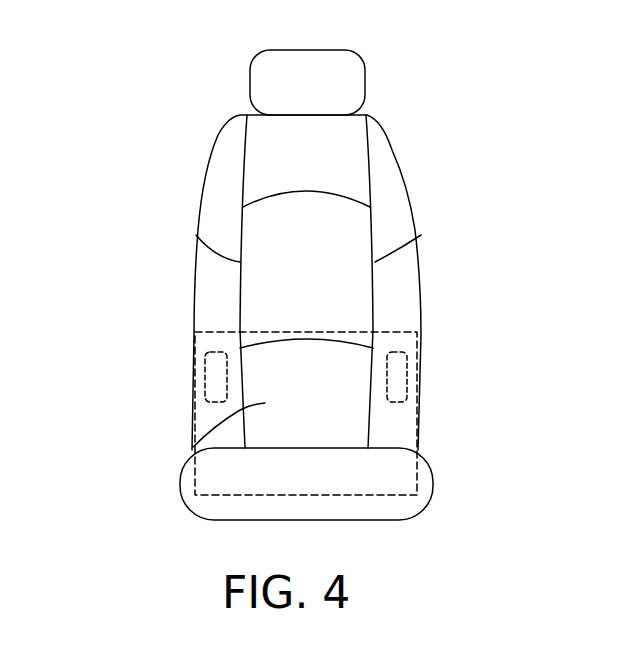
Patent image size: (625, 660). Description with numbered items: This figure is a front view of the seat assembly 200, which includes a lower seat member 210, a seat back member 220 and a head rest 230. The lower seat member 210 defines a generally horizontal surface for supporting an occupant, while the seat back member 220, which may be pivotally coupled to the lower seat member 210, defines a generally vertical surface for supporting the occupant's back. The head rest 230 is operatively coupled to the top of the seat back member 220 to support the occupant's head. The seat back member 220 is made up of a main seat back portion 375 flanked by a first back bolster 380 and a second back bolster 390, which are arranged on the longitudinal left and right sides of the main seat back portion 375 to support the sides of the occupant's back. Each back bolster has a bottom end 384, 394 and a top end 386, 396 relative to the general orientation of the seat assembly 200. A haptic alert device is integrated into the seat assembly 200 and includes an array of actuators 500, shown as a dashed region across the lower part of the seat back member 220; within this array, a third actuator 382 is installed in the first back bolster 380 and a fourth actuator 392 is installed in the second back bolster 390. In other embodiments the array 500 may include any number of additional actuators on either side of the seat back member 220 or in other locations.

The seat assembly 200 is at (124, 57).
The lower seat member 210 is at (428, 486).
The seat back member 220 is at (214, 134).
The head rest 230 is at (291, 48).
The main seat back portion 375 is at (194, 446).
The first back bolster 380 is at (200, 428).
The third actuator 382 is at (208, 380).
The bottom end of first back bolster 384 is at (227, 452).
The top end of first back bolster 386 is at (237, 117).
The second back bolster 390 is at (413, 428).
The fourth actuator 392 is at (403, 378).
The bottom end of second back bolster 394 is at (387, 450).
The top end of second back bolster 396 is at (380, 118).
The array of actuators 500 is at (309, 328).